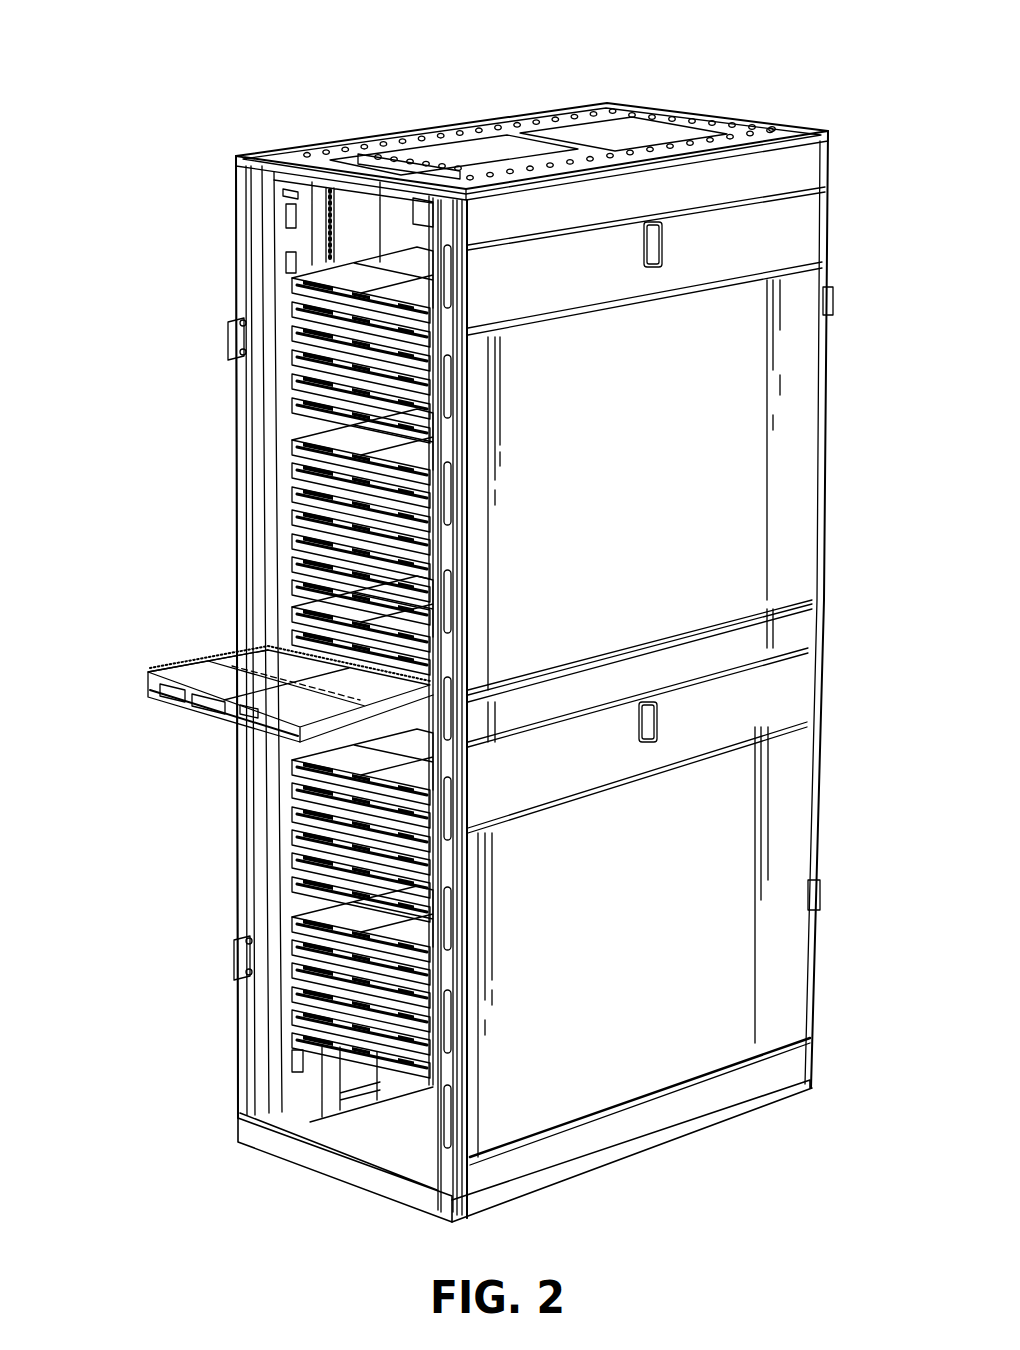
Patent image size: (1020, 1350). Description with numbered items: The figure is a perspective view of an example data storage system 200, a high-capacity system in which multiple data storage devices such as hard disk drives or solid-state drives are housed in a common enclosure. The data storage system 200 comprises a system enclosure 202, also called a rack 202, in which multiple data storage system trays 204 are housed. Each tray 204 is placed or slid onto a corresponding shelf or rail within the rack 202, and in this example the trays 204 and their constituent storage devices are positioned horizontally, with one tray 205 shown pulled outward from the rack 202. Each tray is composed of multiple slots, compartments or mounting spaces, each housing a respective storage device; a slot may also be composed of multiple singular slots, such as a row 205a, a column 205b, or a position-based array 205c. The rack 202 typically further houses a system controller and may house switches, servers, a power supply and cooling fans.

The data storage system 200 is at (303, 80).
The system enclosure 202 is at (800, 231).
The data storage system tray 204 is at (219, 420).
The tray 205 is at (313, 667).
The row 205a is at (182, 660).
The column 205b is at (437, 708).
The position-based array 205c is at (219, 644).